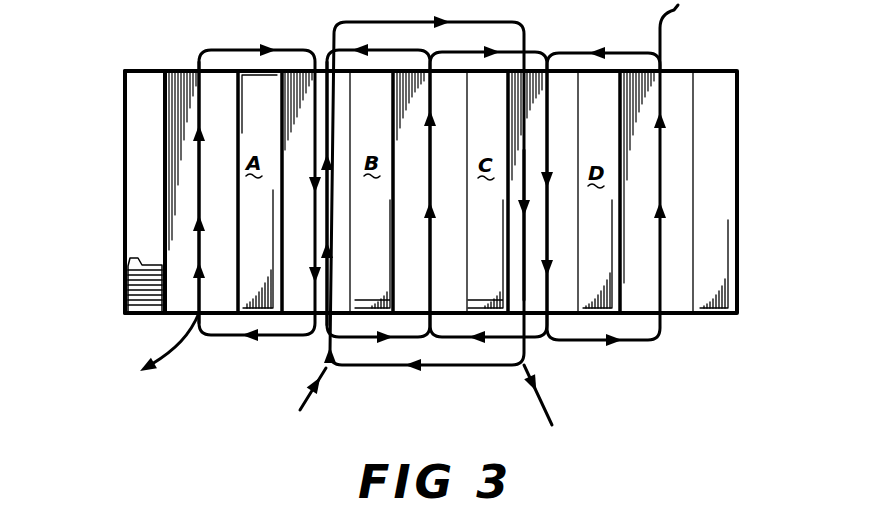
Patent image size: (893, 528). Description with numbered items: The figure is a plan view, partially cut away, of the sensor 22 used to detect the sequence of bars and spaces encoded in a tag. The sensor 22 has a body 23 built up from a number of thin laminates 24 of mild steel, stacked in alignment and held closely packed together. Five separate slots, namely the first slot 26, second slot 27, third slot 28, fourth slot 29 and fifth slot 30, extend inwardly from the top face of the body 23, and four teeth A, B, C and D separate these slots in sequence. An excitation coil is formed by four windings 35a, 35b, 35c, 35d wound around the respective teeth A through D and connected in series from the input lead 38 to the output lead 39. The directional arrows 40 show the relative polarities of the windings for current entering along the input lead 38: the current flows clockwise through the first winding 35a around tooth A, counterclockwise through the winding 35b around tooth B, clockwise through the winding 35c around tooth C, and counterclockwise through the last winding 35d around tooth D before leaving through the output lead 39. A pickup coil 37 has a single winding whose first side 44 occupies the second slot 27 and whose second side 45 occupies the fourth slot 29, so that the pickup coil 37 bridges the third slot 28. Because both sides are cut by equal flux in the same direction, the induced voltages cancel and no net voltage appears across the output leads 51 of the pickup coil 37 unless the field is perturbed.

The sensor 22 is at (56, 178).
The body 23 is at (127, 226).
The laminates 24 is at (127, 292).
The first slot 26 is at (192, 70).
The second slot 27 is at (315, 70).
The third slot 28 is at (420, 70).
The fourth slot 29 is at (548, 72).
The fifth slot 30 is at (682, 78).
The first winding 35a is at (232, 337).
The winding 35b is at (404, 338).
The winding 35c is at (533, 340).
The last winding 35d is at (659, 340).
The pickup coil 37 is at (506, 21).
The input lead 38 is at (163, 345).
The output lead 39 is at (672, 9).
The directional arrows 40 is at (202, 217).
The first side 44 is at (336, 258).
The second side 45 is at (524, 247).
The output leads 51 is at (332, 370).